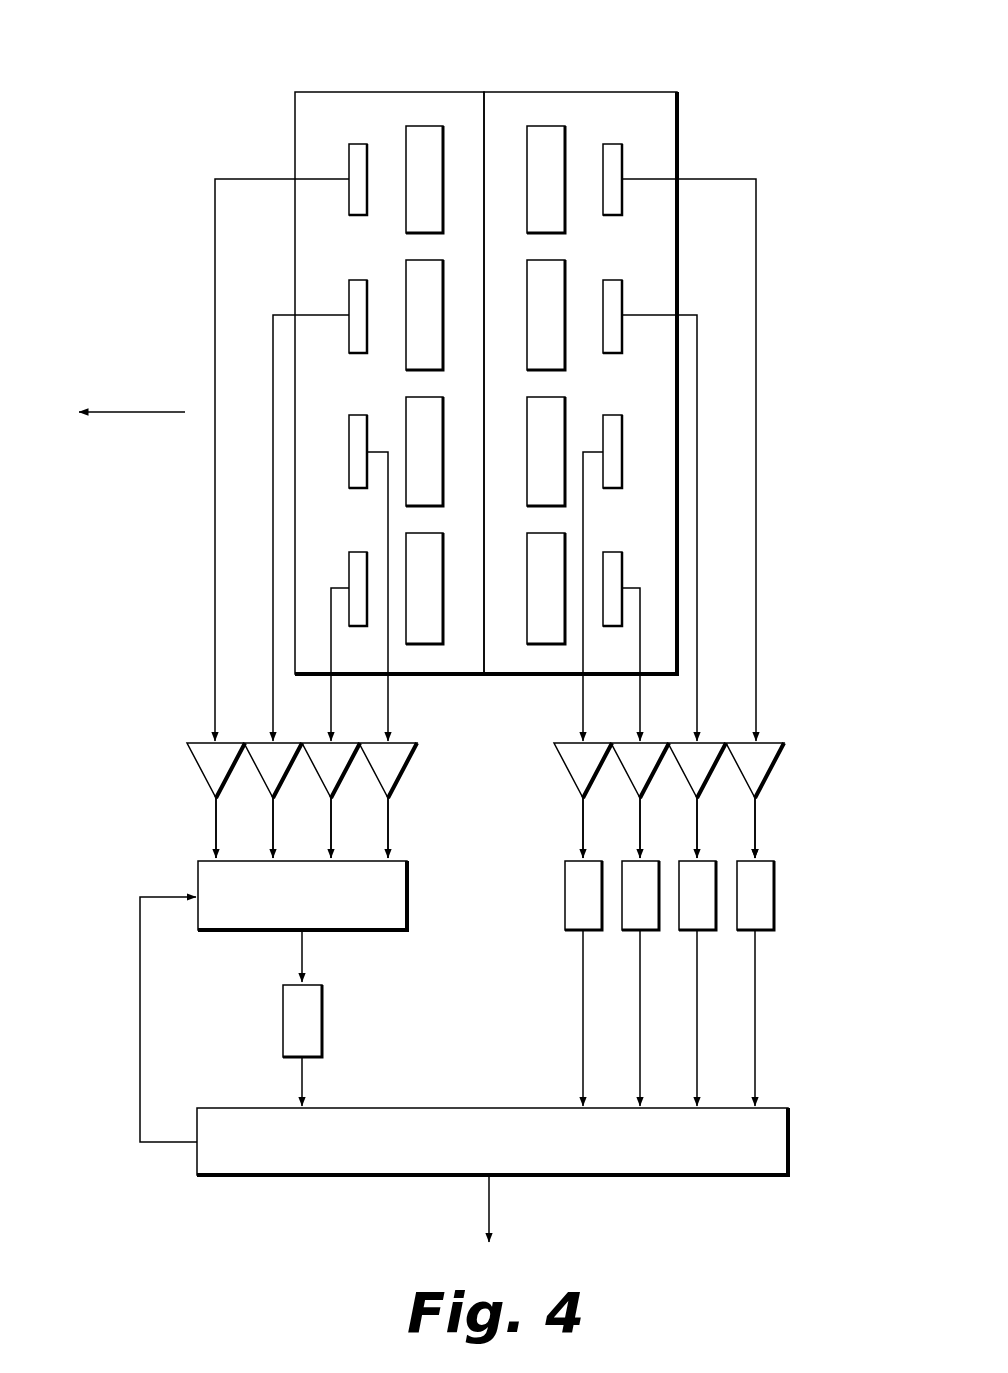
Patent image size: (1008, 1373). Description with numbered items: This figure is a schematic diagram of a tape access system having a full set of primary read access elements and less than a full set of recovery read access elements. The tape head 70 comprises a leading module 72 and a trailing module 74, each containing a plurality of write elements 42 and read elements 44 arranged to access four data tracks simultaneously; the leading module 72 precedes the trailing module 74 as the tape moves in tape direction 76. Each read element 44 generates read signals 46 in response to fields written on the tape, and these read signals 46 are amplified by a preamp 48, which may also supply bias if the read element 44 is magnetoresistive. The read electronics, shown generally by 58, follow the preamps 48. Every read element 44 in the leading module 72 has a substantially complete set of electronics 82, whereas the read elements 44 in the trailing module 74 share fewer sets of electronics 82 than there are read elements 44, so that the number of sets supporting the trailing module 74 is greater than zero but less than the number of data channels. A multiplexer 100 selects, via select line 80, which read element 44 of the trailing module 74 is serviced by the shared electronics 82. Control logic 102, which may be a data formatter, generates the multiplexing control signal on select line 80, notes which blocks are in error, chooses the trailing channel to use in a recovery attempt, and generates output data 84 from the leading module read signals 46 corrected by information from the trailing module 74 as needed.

The tape head 70 is at (423, 342).
The leading module 72 is at (608, 92).
The trailing module 74 is at (360, 92).
The write element 42 is at (417, 125).
The read element 44 is at (358, 280).
The read signal 46 is at (388, 688).
The preamp 48 is at (403, 780).
The read electronics 58 is at (196, 689).
The tape direction 76 is at (132, 412).
The select line 80 is at (140, 1027).
The electronics 82 is at (323, 1025).
The output data 84 is at (489, 1202).
The multiplexer 100 is at (408, 900).
The control logic 102 is at (700, 1177).